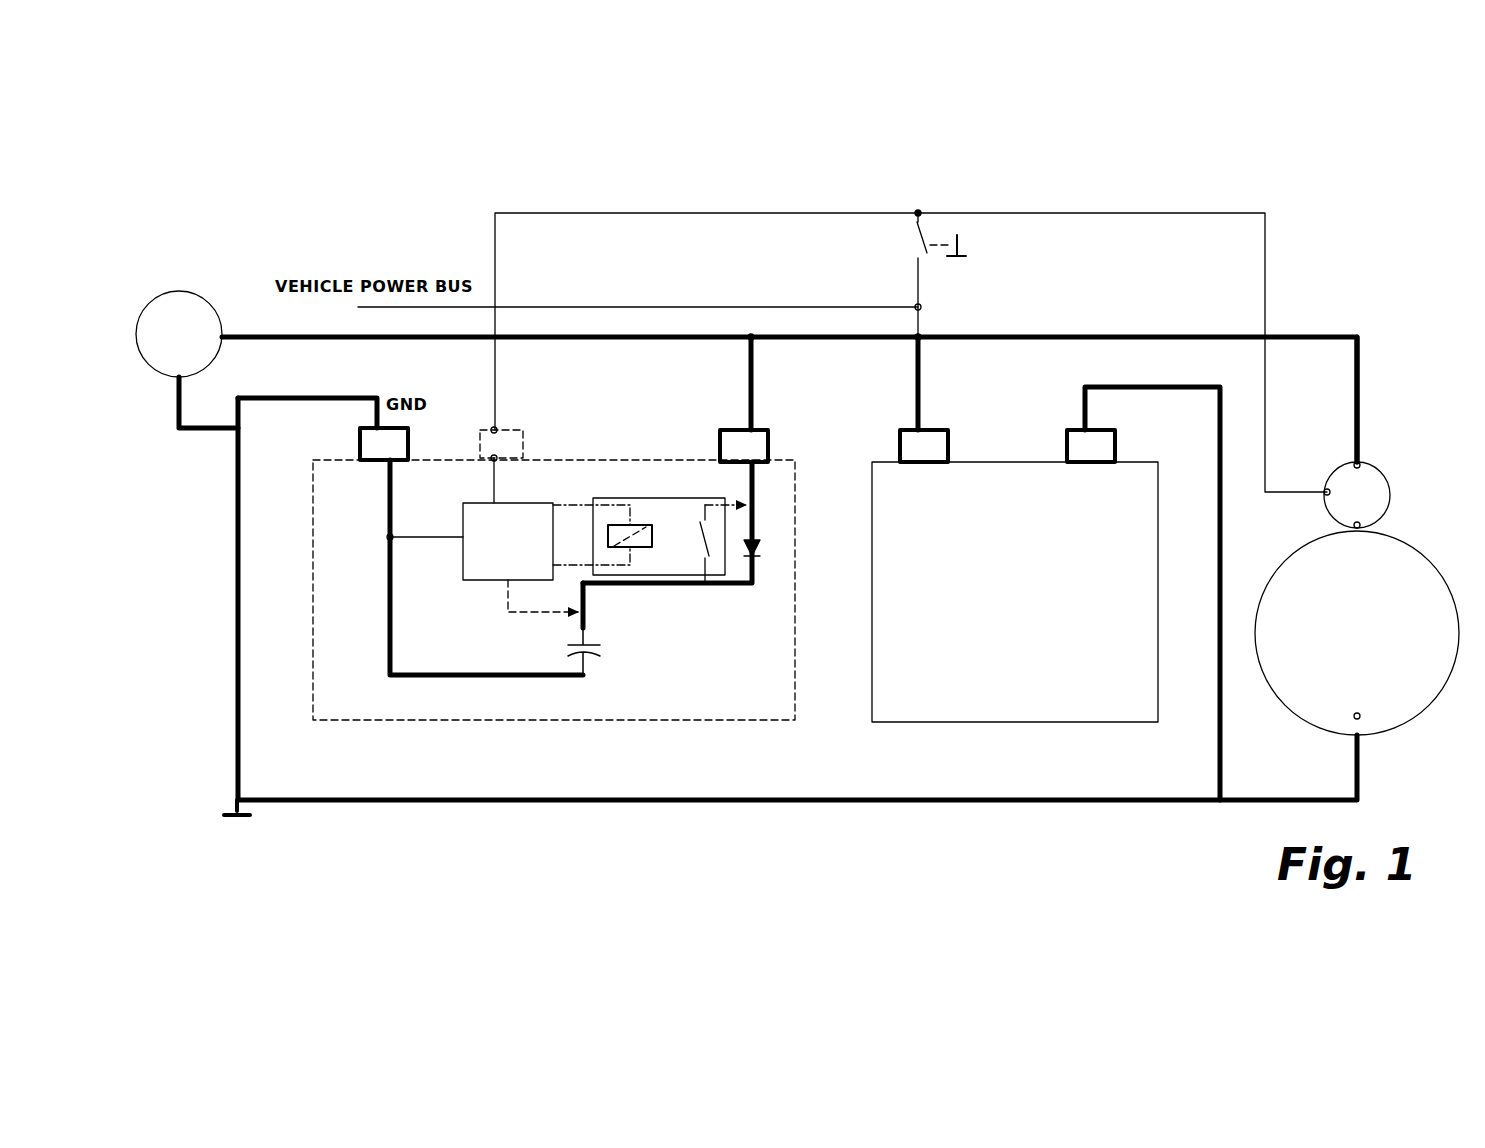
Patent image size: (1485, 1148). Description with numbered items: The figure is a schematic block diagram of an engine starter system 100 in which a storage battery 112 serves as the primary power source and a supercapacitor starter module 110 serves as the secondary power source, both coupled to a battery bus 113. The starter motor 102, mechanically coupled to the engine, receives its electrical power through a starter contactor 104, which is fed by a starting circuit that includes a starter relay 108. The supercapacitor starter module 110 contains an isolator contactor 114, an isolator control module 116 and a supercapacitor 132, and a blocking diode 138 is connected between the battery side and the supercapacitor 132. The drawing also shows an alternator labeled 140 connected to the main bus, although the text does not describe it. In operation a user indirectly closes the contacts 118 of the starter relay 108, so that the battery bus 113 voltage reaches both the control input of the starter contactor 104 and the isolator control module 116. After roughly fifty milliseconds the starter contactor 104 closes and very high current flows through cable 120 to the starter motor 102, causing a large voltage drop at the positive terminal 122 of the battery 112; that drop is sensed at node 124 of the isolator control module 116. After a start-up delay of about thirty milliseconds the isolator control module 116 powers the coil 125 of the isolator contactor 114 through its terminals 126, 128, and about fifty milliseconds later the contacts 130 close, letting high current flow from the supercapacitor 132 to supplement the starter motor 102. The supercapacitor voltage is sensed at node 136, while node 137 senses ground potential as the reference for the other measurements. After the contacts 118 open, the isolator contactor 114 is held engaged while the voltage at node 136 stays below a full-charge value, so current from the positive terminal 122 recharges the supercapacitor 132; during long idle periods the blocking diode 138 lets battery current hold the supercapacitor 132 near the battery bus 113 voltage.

The engine starter system 100 is at (520, 150).
The starter motor 102 is at (1357, 633).
The starter contactor 104 is at (1357, 495).
The starter relay 108 is at (952, 281).
The supercapacitor starter module 110 is at (554, 590).
The storage battery 112 is at (1046, 593).
The battery bus 113 is at (922, 378).
The isolator contactor 114 is at (688, 577).
The isolator control module 116 is at (508, 541).
The starter relay contacts 118 is at (905, 243).
The cable 120 is at (1360, 420).
The positive terminal 122 is at (947, 432).
The node 124 is at (493, 500).
The coil 125 is at (645, 549).
The terminal 126 is at (567, 519).
The terminal 128 is at (555, 567).
The contacts 130 is at (690, 537).
The supercapacitor 132 is at (610, 672).
The node 136 is at (508, 582).
The node 137 is at (463, 540).
The blocking diode 138 is at (762, 535).
The alternator 140 is at (179, 334).